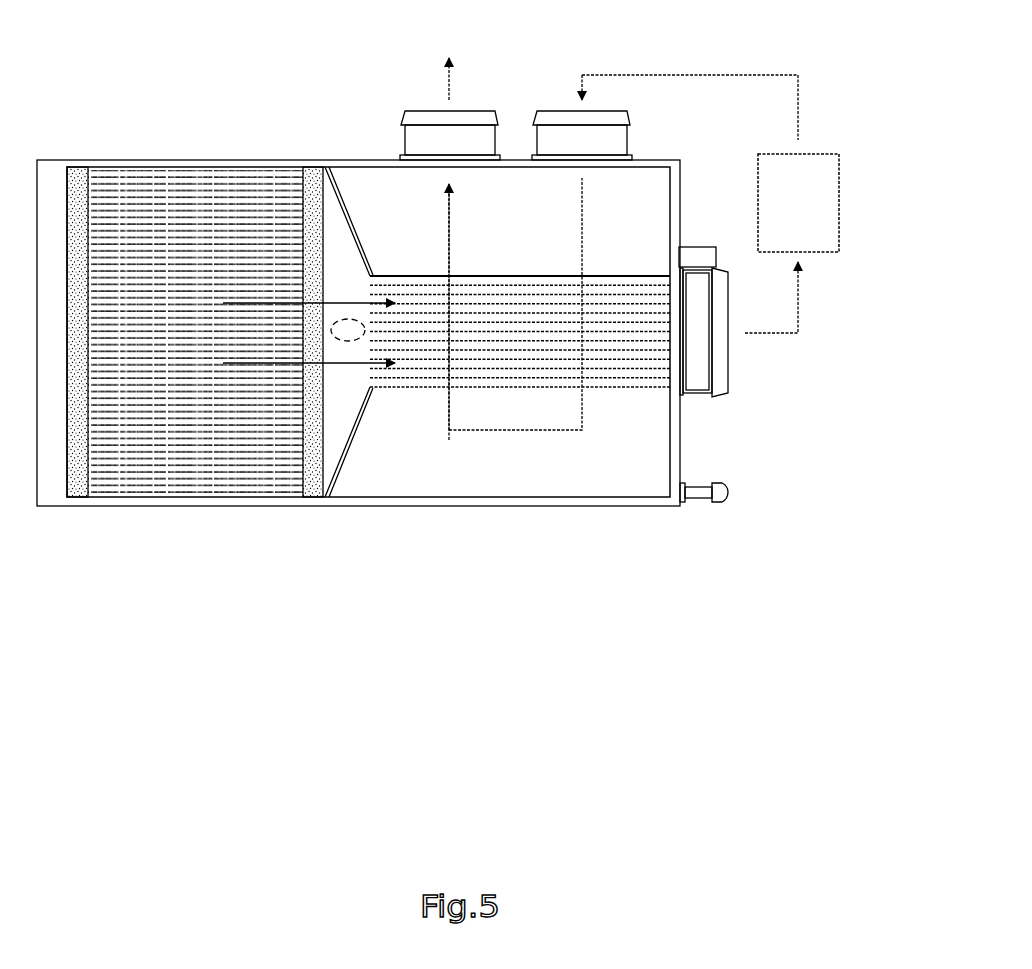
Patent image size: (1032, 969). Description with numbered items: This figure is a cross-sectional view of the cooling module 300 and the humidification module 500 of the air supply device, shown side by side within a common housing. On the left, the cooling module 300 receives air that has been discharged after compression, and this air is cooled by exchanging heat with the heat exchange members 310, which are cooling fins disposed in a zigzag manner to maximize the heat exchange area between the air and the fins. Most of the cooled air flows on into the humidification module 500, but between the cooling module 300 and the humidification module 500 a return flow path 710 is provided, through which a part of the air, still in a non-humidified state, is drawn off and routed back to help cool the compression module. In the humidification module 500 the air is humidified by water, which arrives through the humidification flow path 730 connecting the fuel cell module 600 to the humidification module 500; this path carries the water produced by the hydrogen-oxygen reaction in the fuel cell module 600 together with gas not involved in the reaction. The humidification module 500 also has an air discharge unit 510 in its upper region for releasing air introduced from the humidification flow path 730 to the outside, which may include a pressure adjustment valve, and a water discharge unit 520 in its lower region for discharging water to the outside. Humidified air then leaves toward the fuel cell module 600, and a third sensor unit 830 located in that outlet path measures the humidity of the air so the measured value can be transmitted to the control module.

The cooling module 300 is at (185, 521).
The heat exchange member 310 is at (107, 466).
The humidification module 500 is at (497, 521).
The air discharge unit 510 is at (404, 140).
The water discharge unit 520 is at (696, 503).
The fuel cell module 600 is at (840, 203).
The return flow path 710 is at (347, 341).
The humidification flow path 730 is at (681, 74).
The third sensor unit 830 is at (700, 247).